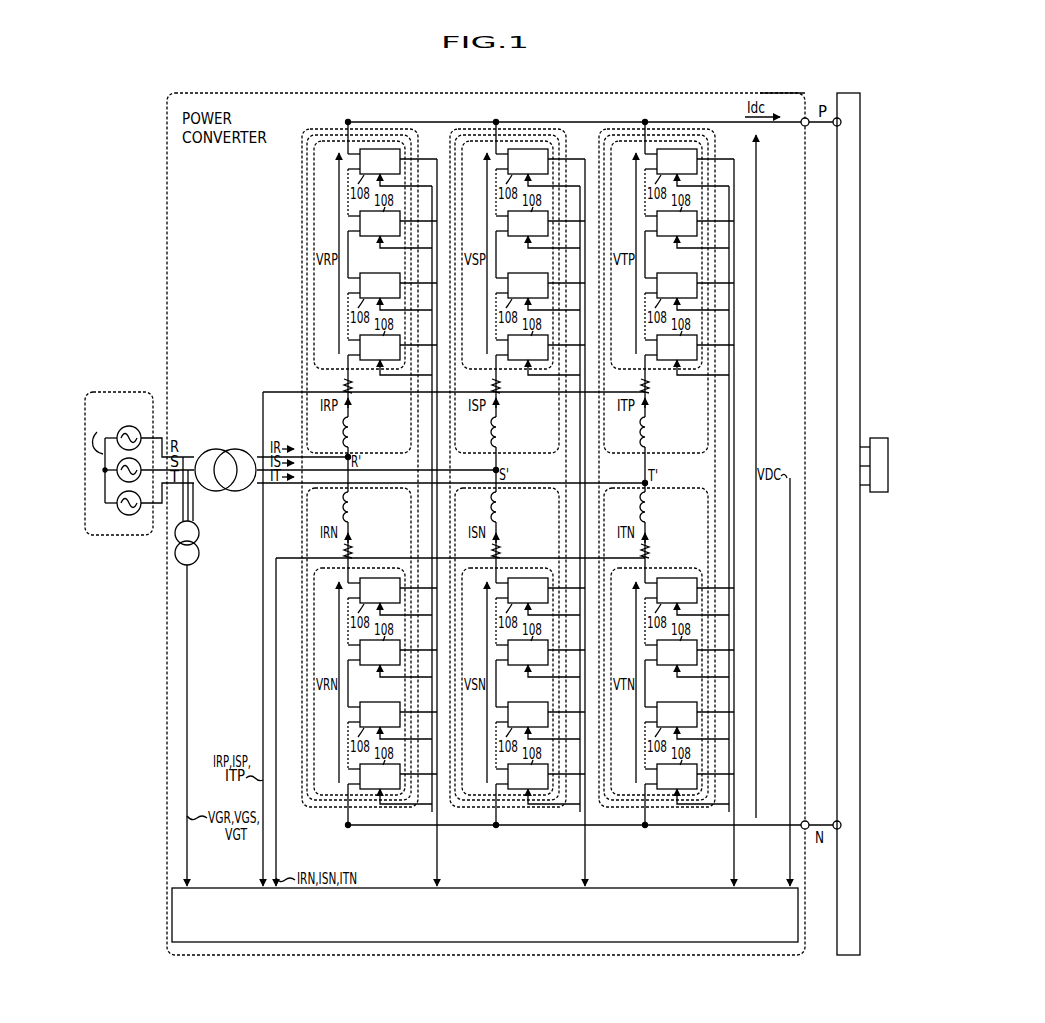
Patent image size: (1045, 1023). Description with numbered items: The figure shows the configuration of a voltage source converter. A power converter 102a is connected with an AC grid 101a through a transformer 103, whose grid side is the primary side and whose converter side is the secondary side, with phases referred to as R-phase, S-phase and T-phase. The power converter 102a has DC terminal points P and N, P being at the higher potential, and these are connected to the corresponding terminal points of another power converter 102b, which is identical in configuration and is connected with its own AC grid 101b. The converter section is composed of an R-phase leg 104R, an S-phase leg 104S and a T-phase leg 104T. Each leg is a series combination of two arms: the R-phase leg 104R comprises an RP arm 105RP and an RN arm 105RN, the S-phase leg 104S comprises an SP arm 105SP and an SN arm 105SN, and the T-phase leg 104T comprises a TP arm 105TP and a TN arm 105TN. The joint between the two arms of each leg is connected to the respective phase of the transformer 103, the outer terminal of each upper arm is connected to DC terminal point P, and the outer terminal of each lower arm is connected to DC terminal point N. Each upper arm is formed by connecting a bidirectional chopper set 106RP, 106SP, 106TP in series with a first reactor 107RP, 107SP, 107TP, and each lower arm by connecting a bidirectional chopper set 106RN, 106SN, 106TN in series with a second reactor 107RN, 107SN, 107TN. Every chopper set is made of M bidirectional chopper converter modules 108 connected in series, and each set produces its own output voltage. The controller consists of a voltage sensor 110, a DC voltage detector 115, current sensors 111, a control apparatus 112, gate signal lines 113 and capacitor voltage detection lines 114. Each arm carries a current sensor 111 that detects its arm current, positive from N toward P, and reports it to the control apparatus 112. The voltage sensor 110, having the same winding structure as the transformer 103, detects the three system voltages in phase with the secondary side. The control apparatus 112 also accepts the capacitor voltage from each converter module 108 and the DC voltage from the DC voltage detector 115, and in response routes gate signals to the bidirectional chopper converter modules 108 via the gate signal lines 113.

The AC grid 101a is at (114, 392).
The AC grid 101b is at (878, 438).
The power converter 102a is at (765, 93).
The power converter 102b is at (851, 93).
The transformer 103 is at (228, 449).
The R-phase leg 104R is at (325, 129).
The S-phase leg 104S is at (473, 129).
The T-phase leg 104T is at (622, 129).
The RP arm 105RP is at (353, 135).
The SP arm 105SP is at (501, 135).
The TP arm 105TP is at (650, 135).
The RN arm 105RN is at (355, 800).
The SN arm 105SN is at (503, 800).
The TN arm 105TN is at (660, 800).
The bidirectional chopper set 106RP is at (393, 141).
The bidirectional chopper set 106SP is at (541, 141).
The bidirectional chopper set 106TP is at (690, 141).
The bidirectional chopper set 106RN is at (320, 795).
The bidirectional chopper set 106SN is at (468, 795).
The bidirectional chopper set 106TN is at (618, 795).
The first reactor 107RP is at (352, 434).
The first reactor 107SP is at (500, 434).
The first reactor 107TP is at (649, 434).
The second reactor 107RN is at (352, 501).
The second reactor 107SN is at (500, 501).
The second reactor 107TN is at (649, 501).
The bidirectional chopper converter module 108 is at (536, 476).
The voltage sensor 110 is at (202, 552).
The current sensor 111 is at (344, 387).
The control apparatus 112 is at (172, 914).
The gate signal line 113 is at (431, 868).
The capacitor voltage detection line 114 is at (438, 868).
The DC voltage detector 115 is at (788, 473).